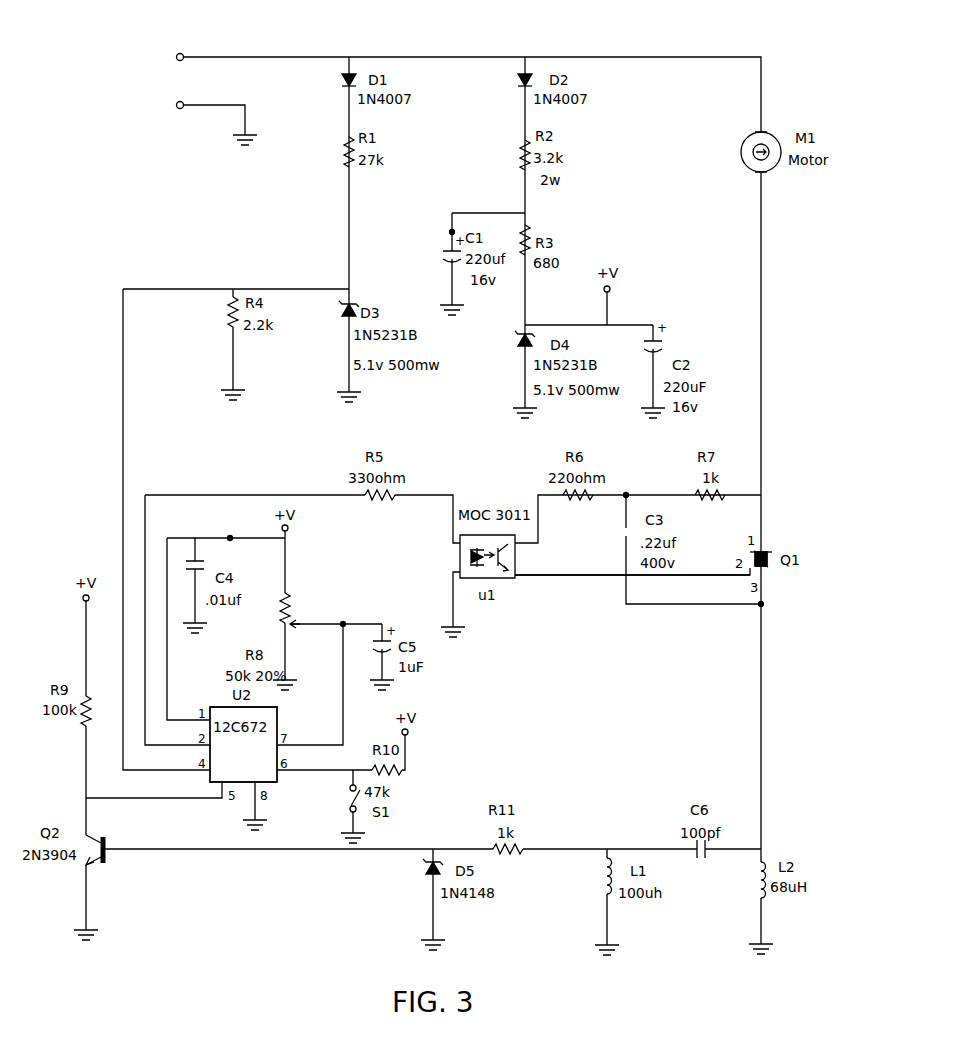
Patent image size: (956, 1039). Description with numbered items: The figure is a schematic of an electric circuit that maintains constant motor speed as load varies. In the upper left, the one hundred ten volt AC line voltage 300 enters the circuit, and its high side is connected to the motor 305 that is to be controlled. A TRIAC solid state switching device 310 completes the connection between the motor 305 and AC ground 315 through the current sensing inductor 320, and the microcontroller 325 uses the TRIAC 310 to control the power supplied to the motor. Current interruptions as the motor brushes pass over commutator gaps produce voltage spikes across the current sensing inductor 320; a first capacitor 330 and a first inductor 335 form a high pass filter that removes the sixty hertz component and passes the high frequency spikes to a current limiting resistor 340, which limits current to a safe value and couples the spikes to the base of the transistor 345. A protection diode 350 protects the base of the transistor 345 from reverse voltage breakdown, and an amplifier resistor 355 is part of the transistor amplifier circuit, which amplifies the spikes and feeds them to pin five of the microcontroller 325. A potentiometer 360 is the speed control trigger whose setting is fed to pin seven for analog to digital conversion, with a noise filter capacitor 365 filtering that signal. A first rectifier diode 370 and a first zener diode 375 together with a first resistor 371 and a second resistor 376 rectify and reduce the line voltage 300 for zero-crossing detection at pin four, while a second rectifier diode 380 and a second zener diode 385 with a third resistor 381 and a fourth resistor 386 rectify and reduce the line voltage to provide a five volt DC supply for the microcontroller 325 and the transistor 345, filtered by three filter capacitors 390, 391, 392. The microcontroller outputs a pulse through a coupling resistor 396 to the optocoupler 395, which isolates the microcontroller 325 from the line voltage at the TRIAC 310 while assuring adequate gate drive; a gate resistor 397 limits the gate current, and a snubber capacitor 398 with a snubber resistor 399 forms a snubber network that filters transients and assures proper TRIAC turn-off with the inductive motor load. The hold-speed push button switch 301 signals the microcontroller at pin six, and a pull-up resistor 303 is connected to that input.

The 110 VAC line voltage 300 is at (112, 82).
The motor M1 305 is at (741, 152).
The TRIAC solid state switching device Q1 310 is at (795, 563).
The AC ground 315 is at (768, 950).
The current sensing inductor L2 320 is at (766, 895).
The microcontroller U2 325 is at (243, 744).
The capacitor C6 330 is at (696, 875).
The inductor L1 335 is at (602, 882).
The resistor R11 340 is at (516, 843).
The transistor Q2 345 is at (108, 856).
The diode D5 350 is at (420, 875).
The resistor R9 355 is at (82, 729).
The potentiometer R8 360 is at (300, 620).
The capacitor C5 365 is at (375, 648).
The diode D1 370 is at (340, 83).
The resistor R1 371 is at (344, 153).
The diode D3 375 is at (344, 312).
The resistor R4 376 is at (230, 315).
The diode D2 380 is at (516, 83).
The resistor R2 381 is at (520, 153).
The diode D4 385 is at (518, 340).
The resistor R3 386 is at (530, 230).
The capacitor C1 390 is at (441, 257).
The capacitor C2 391 is at (665, 345).
The capacitor C4 392 is at (208, 573).
The optocoupler U1 395 is at (465, 637).
The resistor R5 396 is at (380, 505).
The resistor R6 397 is at (578, 505).
The capacitor C3 398 is at (596, 577).
The resistor R7 399 is at (710, 505).
The switch S1 301 is at (343, 803).
The resistor R10 303 is at (388, 786).